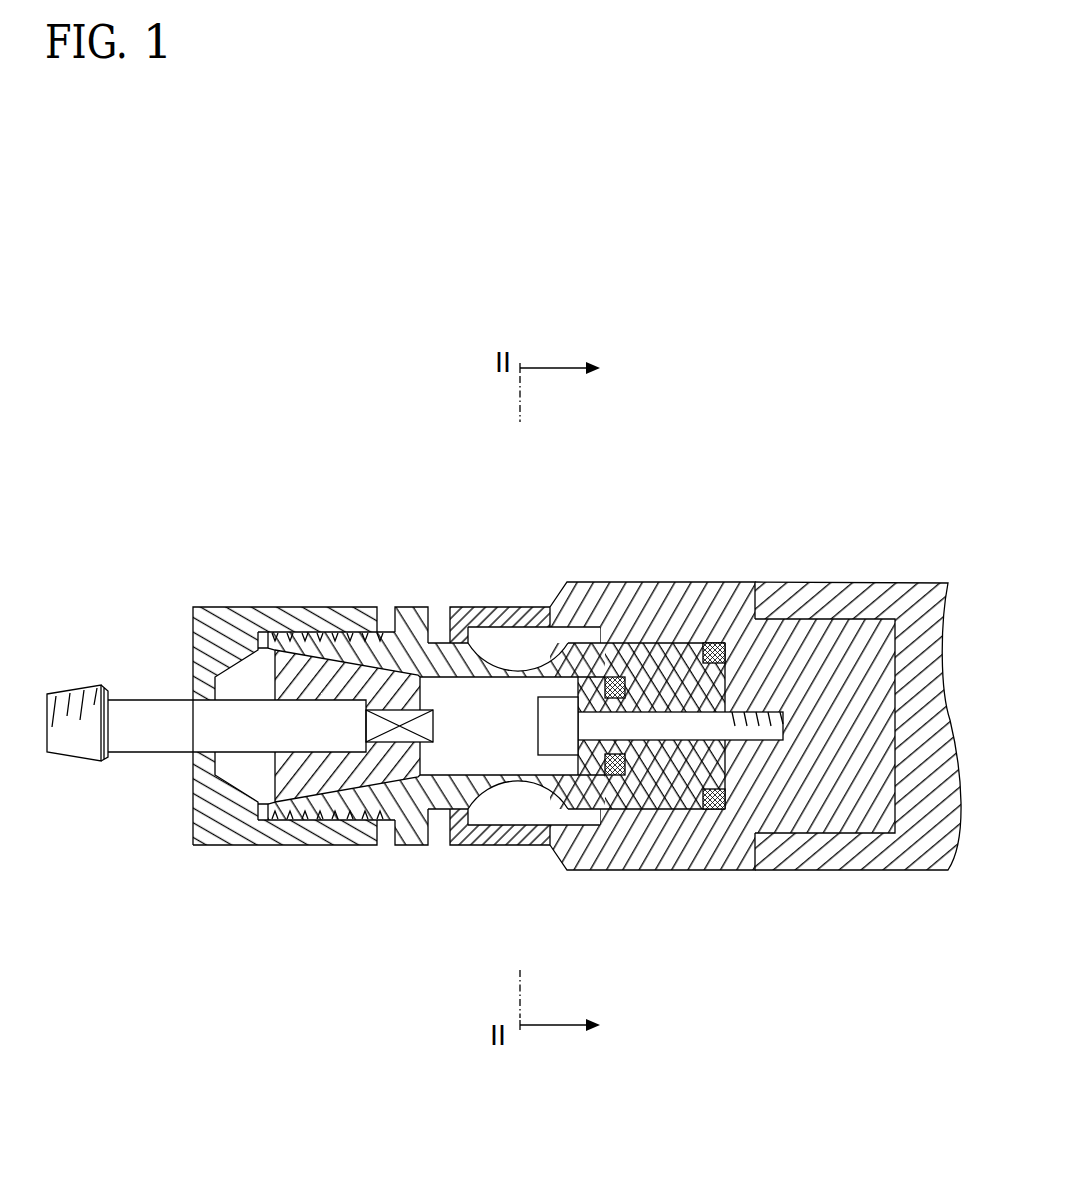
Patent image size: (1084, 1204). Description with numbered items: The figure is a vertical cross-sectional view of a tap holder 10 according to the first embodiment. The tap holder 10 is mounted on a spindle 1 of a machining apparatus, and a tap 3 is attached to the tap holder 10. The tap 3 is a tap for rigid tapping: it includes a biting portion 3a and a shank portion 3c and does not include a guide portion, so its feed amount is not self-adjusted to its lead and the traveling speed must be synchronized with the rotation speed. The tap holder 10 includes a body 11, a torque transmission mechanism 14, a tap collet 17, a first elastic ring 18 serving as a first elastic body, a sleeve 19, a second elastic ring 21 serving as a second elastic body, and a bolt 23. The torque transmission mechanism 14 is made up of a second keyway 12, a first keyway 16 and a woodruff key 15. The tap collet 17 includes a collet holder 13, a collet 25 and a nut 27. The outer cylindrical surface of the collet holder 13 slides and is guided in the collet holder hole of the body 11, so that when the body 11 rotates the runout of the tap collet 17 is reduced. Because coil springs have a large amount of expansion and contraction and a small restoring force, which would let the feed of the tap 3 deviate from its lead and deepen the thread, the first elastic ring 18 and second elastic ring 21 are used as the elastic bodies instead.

The spindle 1 is at (853, 582).
The tap 3 is at (240, 599).
The biting portion 3a is at (75, 688).
The shank portion 3c is at (145, 700).
The tap holder 10 is at (544, 678).
The body 11 is at (648, 582).
The second keyway 12 is at (458, 632).
The collet holder 13 is at (400, 666).
The torque transmission mechanism 14 is at (496, 641).
The woodruff key 15 is at (512, 627).
The first keyway 16 is at (550, 643).
The tap collet 17 is at (310, 641).
The first elastic ring 18 is at (712, 809).
The sleeve 19 is at (588, 775).
The second elastic ring 21 is at (614, 775).
The bolt 23 is at (546, 755).
The collet 25 is at (305, 645).
The nut 27 is at (222, 607).